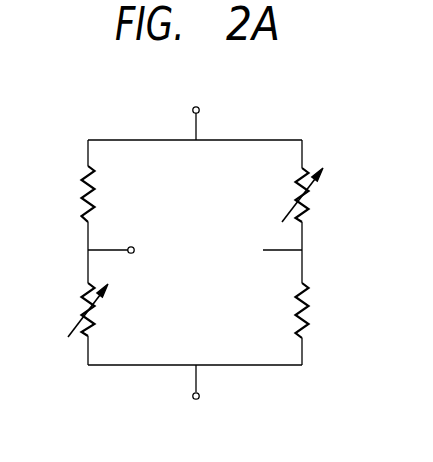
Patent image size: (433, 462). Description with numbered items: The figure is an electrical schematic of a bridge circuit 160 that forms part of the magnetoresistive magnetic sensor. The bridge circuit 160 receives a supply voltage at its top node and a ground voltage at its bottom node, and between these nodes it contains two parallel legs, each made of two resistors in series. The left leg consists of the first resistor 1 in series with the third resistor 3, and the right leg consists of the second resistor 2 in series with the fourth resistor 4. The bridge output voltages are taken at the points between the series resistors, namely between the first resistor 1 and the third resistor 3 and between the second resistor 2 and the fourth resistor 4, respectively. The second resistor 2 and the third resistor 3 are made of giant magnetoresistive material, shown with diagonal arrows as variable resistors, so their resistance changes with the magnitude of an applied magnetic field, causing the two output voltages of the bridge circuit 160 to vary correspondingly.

The bridge circuit 160 is at (78, 126).
The first resistor 1 is at (69, 194).
The second resistor 2 is at (314, 196).
The third resistor 3 is at (75, 310).
The fourth resistor 4 is at (321, 311).